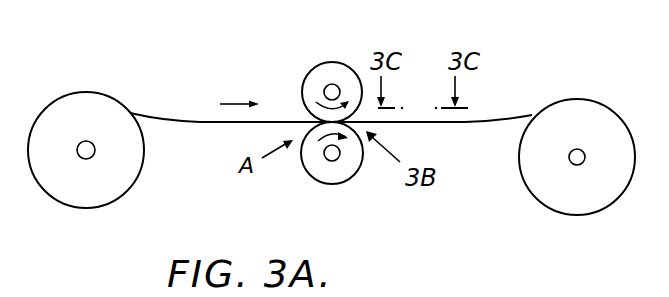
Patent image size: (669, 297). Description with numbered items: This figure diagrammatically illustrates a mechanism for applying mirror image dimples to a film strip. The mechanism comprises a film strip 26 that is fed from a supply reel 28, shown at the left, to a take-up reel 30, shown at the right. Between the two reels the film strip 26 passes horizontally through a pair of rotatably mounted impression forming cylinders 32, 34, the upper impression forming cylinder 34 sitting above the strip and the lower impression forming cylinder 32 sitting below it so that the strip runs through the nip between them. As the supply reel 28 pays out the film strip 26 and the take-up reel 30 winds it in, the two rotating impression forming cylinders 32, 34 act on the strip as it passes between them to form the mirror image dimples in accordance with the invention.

The film strip 26 is at (160, 114).
The supply reel 28 is at (97, 196).
The take-up reel 30 is at (590, 197).
The impression forming cylinder 32 is at (341, 185).
The impression forming cylinder 34 is at (325, 66).